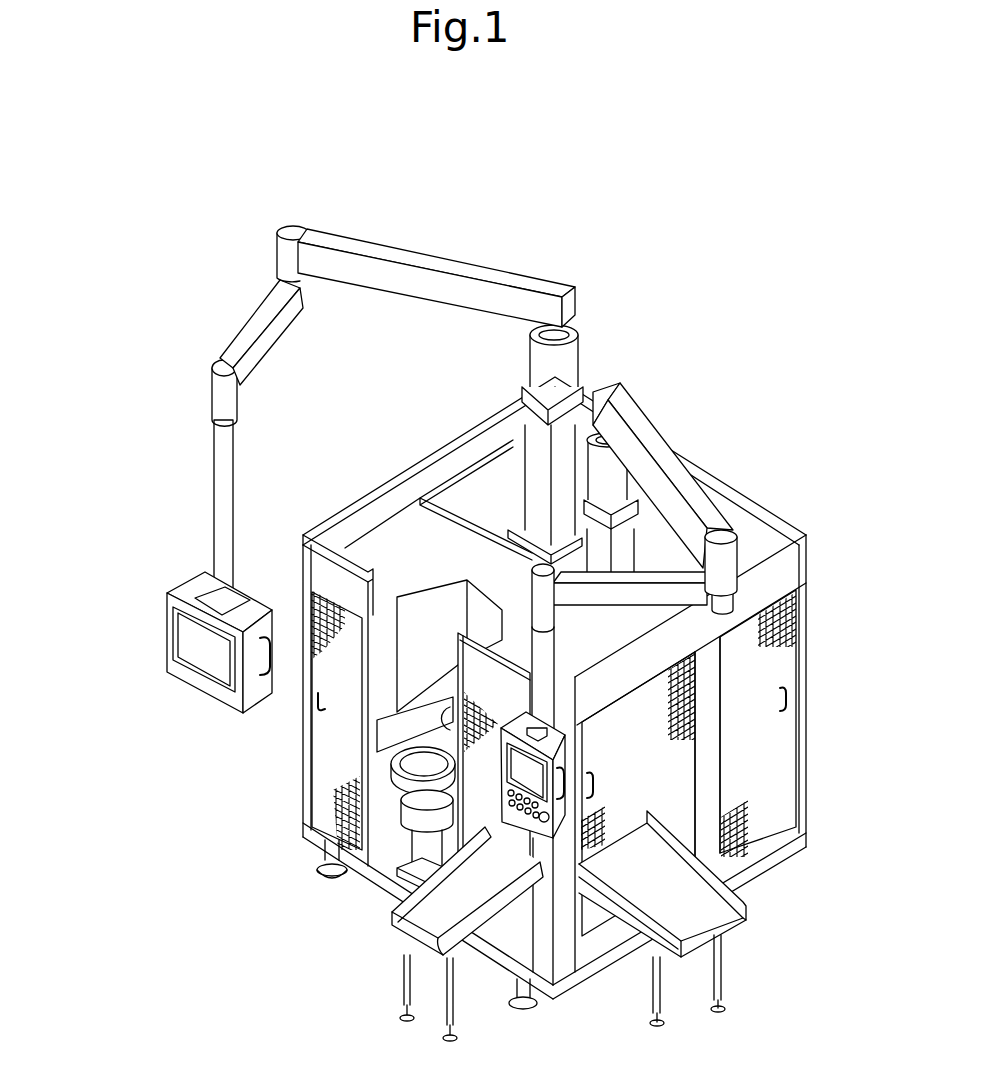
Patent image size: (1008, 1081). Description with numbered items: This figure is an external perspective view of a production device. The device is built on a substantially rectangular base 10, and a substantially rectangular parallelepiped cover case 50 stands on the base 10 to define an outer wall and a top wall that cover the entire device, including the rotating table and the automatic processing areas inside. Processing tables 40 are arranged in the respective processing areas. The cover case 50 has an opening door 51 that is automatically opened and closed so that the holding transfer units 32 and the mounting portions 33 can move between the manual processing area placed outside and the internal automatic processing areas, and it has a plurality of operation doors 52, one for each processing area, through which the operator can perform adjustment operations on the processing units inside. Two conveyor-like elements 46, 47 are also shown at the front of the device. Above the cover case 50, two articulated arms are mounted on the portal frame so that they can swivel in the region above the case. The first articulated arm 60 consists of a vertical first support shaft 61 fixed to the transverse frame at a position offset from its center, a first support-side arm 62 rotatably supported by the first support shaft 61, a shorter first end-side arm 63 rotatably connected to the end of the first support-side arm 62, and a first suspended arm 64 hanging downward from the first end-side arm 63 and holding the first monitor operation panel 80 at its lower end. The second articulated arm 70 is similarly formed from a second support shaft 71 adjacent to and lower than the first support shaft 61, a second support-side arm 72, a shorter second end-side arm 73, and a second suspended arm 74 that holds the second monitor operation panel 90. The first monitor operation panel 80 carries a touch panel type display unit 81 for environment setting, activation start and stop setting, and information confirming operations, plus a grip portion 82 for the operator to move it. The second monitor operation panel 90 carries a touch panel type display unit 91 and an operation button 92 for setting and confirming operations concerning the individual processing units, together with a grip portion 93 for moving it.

The base 10 is at (314, 835).
The holding transfer unit 32 is at (398, 795).
The mounting portion 33 is at (448, 716).
The processing table 40 is at (398, 853).
The board conveyor (inlet) 46 is at (490, 895).
The board conveyor (outlet) 47 is at (625, 878).
The cover case 50 is at (536, 681).
The opening door 51 is at (428, 712).
The operation door 52 is at (318, 727).
The first articulated arm 60 is at (340, 368).
The first support shaft 61 is at (528, 340).
The first support-side arm 62 is at (430, 258).
The first end-side arm 63 is at (268, 302).
The first suspended arm 64 is at (222, 455).
The second articulated arm 70 is at (657, 513).
The second support shaft 71 is at (604, 438).
The second support-side arm 72 is at (687, 470).
The second end-side arm 73 is at (664, 596).
The second suspended arm 74 is at (545, 648).
The first monitor operation panel 80 is at (171, 623).
The touch panel type display unit 81 is at (186, 652).
The grip portion 82 is at (272, 640).
The second monitor operation panel 90 is at (563, 784).
The touch panel type display unit 91 is at (513, 760).
The operation button 92 is at (508, 807).
The grip portion 93 is at (592, 765).